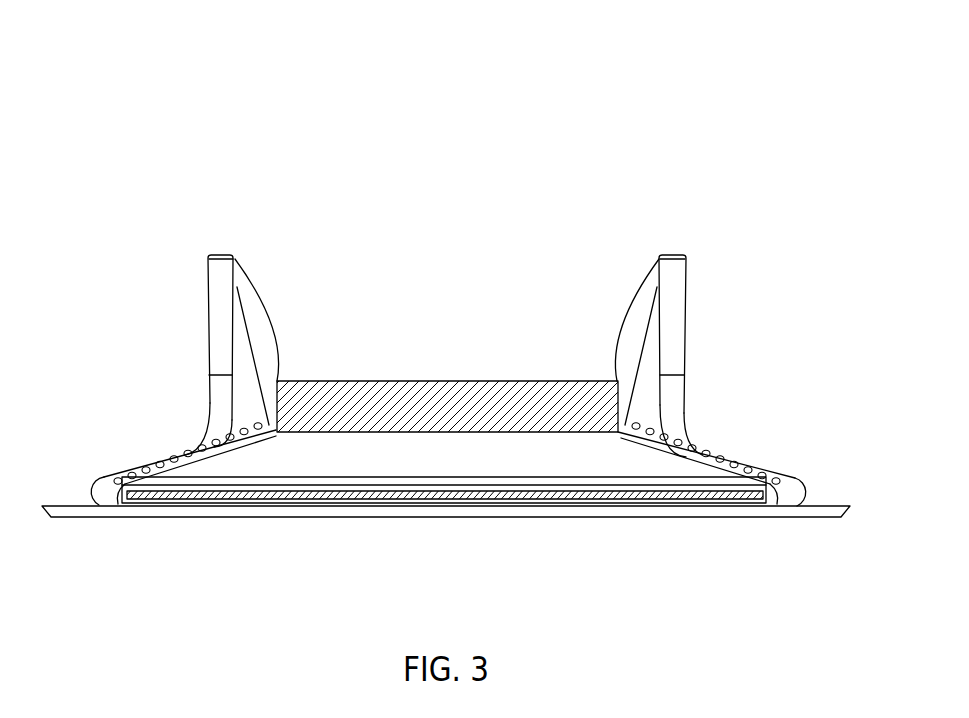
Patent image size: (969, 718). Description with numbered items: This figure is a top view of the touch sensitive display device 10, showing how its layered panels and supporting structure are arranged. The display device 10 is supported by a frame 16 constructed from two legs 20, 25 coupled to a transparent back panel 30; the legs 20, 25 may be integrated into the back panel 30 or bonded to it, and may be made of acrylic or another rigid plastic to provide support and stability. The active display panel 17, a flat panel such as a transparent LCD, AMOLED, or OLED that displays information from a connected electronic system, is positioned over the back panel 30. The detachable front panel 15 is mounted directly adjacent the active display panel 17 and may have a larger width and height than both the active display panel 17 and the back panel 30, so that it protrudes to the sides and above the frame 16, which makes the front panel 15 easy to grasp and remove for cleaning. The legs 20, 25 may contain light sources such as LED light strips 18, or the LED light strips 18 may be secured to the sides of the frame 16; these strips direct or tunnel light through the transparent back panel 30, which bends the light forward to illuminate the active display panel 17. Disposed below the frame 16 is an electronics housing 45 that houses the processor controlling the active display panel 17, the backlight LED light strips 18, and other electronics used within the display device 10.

The touch sensitive display device 10 is at (585, 89).
The front panel 15 is at (256, 507).
The frame 16 is at (100, 474).
The active display panel 17 is at (392, 500).
The LED light strips 18 is at (183, 447).
The leg 20 is at (673, 254).
The leg 25 is at (220, 254).
The back panel 30 is at (412, 478).
The electronics housing 45 is at (318, 380).